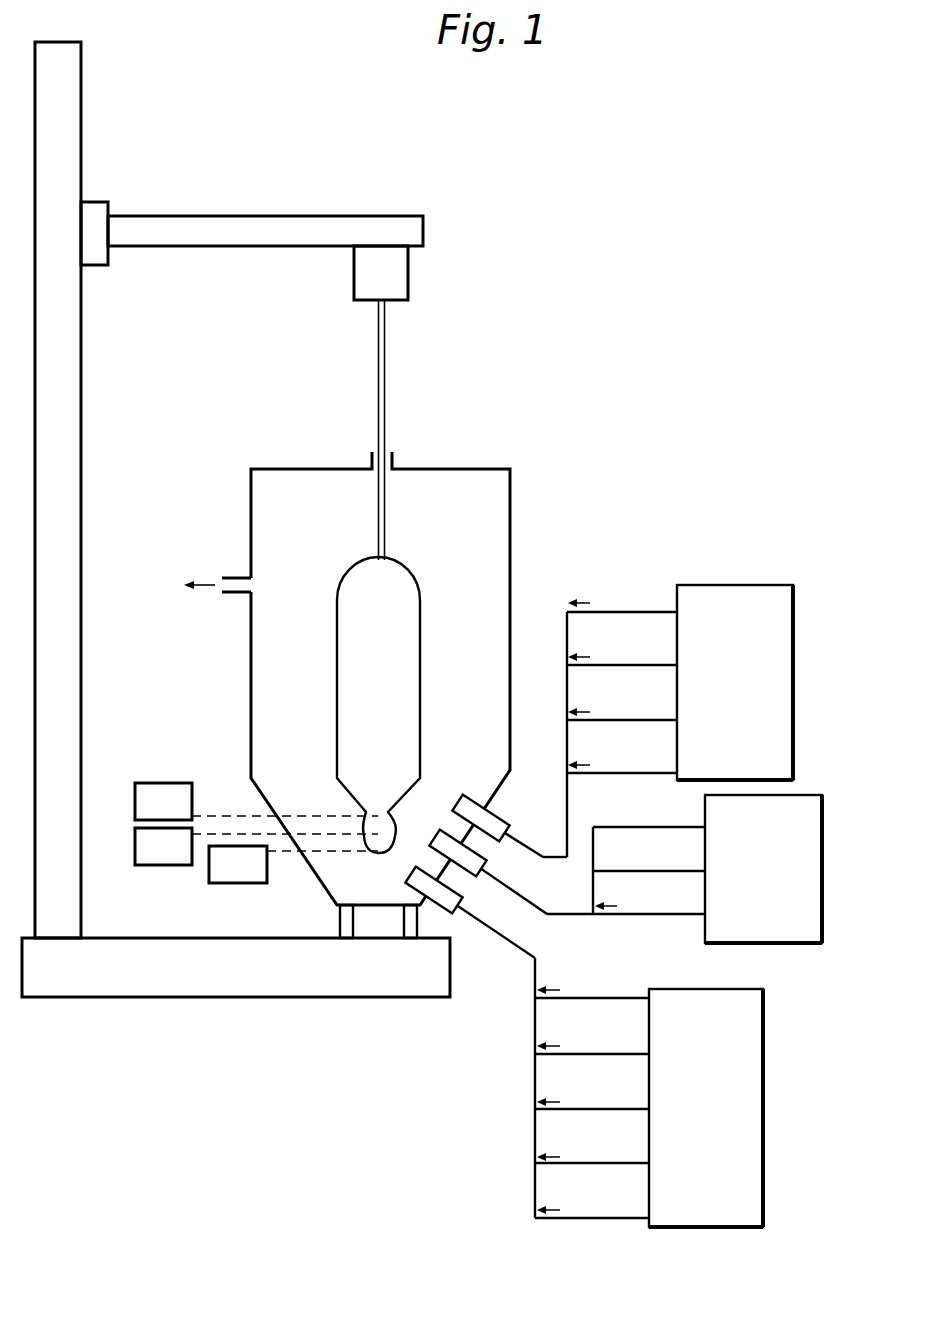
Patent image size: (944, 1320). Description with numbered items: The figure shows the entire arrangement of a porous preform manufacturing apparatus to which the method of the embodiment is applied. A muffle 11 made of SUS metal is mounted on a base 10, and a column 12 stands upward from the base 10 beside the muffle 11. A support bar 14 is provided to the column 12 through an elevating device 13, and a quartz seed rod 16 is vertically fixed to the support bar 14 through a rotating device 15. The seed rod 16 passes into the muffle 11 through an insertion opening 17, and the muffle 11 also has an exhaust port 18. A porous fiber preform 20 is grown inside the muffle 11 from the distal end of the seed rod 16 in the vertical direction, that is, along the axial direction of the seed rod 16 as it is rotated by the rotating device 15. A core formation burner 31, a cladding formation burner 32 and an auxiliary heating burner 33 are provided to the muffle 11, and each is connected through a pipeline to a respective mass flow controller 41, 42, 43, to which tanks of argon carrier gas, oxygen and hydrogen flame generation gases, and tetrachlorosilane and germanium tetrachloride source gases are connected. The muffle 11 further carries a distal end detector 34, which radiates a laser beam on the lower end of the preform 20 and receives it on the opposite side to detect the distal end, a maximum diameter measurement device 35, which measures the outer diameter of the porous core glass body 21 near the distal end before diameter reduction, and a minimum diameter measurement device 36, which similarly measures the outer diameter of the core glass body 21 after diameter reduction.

The base 10 is at (285, 997).
The muffle 11 is at (485, 470).
The column 12 is at (67, 390).
The elevating device 13 is at (105, 202).
The support bar 14 is at (262, 220).
The rotating device 15 is at (397, 288).
The quartz seed rod 16 is at (380, 385).
The insertion opening 17 is at (362, 455).
The exhaust port 18 is at (231, 597).
The porous fiber preform 20 is at (419, 612).
The porous core glass body 21 is at (380, 850).
The core formation burner 31 is at (456, 905).
The cladding formation burner 32 is at (500, 815).
The auxiliary heating burner 33 is at (484, 864).
The distal end detector 34 is at (238, 884).
The maximum diameter measurement device 35 is at (165, 866).
The minimum diameter measurement device 36 is at (160, 782).
The mass flow controller 41 is at (764, 1086).
The mass flow controller 42 is at (823, 886).
The mass flow controller 43 is at (794, 648).